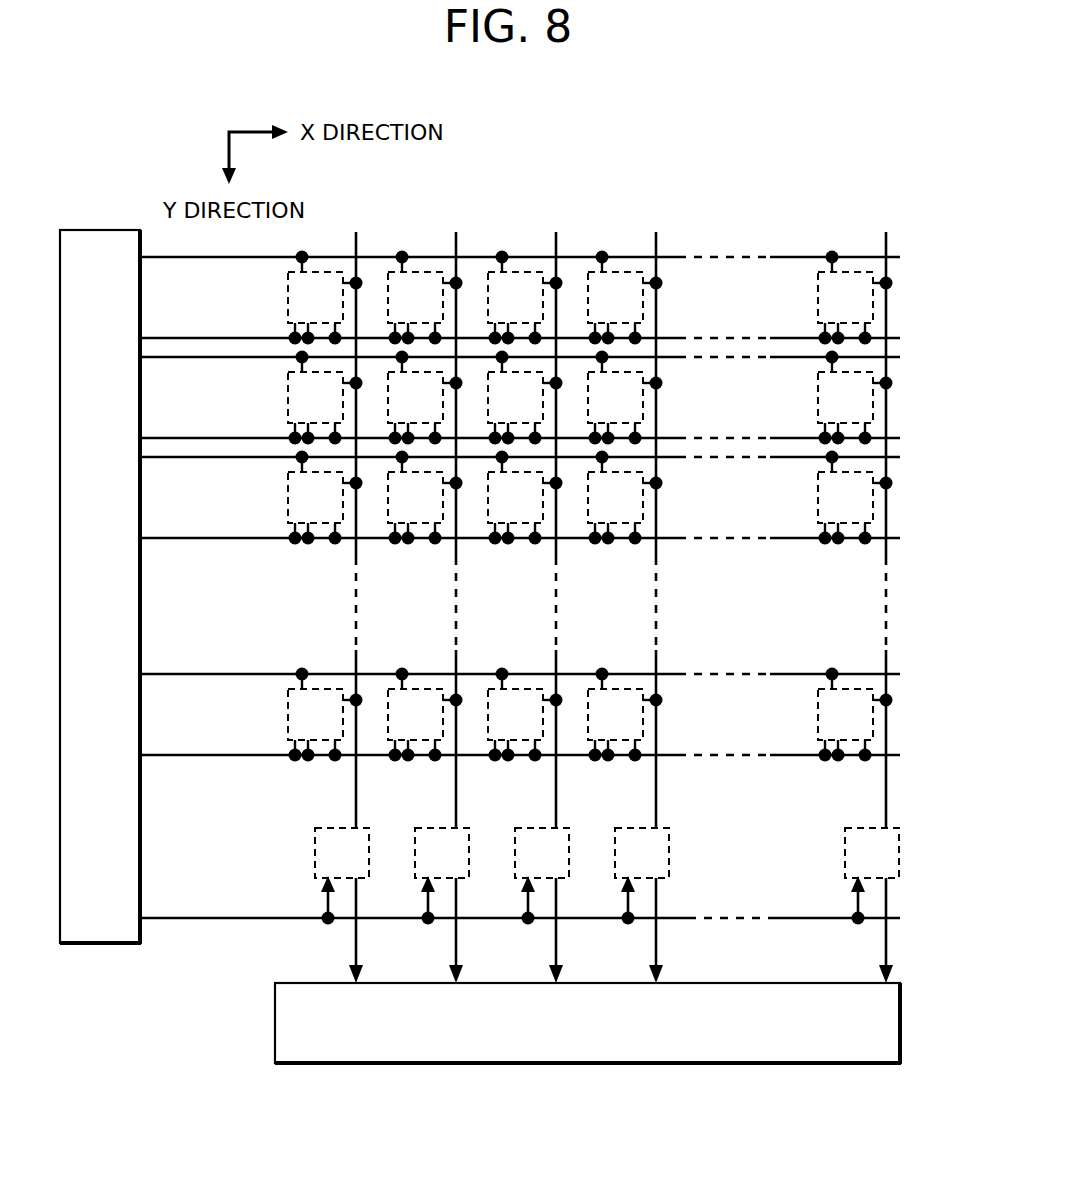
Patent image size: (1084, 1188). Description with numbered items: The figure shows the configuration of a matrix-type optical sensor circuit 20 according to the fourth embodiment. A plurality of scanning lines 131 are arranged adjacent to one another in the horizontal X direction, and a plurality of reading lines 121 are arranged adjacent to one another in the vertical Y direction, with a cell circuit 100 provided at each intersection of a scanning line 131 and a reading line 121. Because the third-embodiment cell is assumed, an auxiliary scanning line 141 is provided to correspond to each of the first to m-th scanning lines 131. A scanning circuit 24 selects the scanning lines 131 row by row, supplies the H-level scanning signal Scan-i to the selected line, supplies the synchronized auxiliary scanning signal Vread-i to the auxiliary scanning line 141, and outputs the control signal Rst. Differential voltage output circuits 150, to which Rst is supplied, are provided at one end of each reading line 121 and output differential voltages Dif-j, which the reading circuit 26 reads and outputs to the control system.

The matrix-type optical sensor circuit 20 is at (526, 157).
The scanning circuit 24 is at (86, 230).
The reading circuit 26 is at (278, 1025).
The cell circuit 100 is at (662, 297).
The reading line 121 is at (658, 656).
The scanning line 131 is at (670, 260).
The auxiliary scanning line 141 is at (680, 337).
The differential voltage output circuit 150 is at (670, 830).